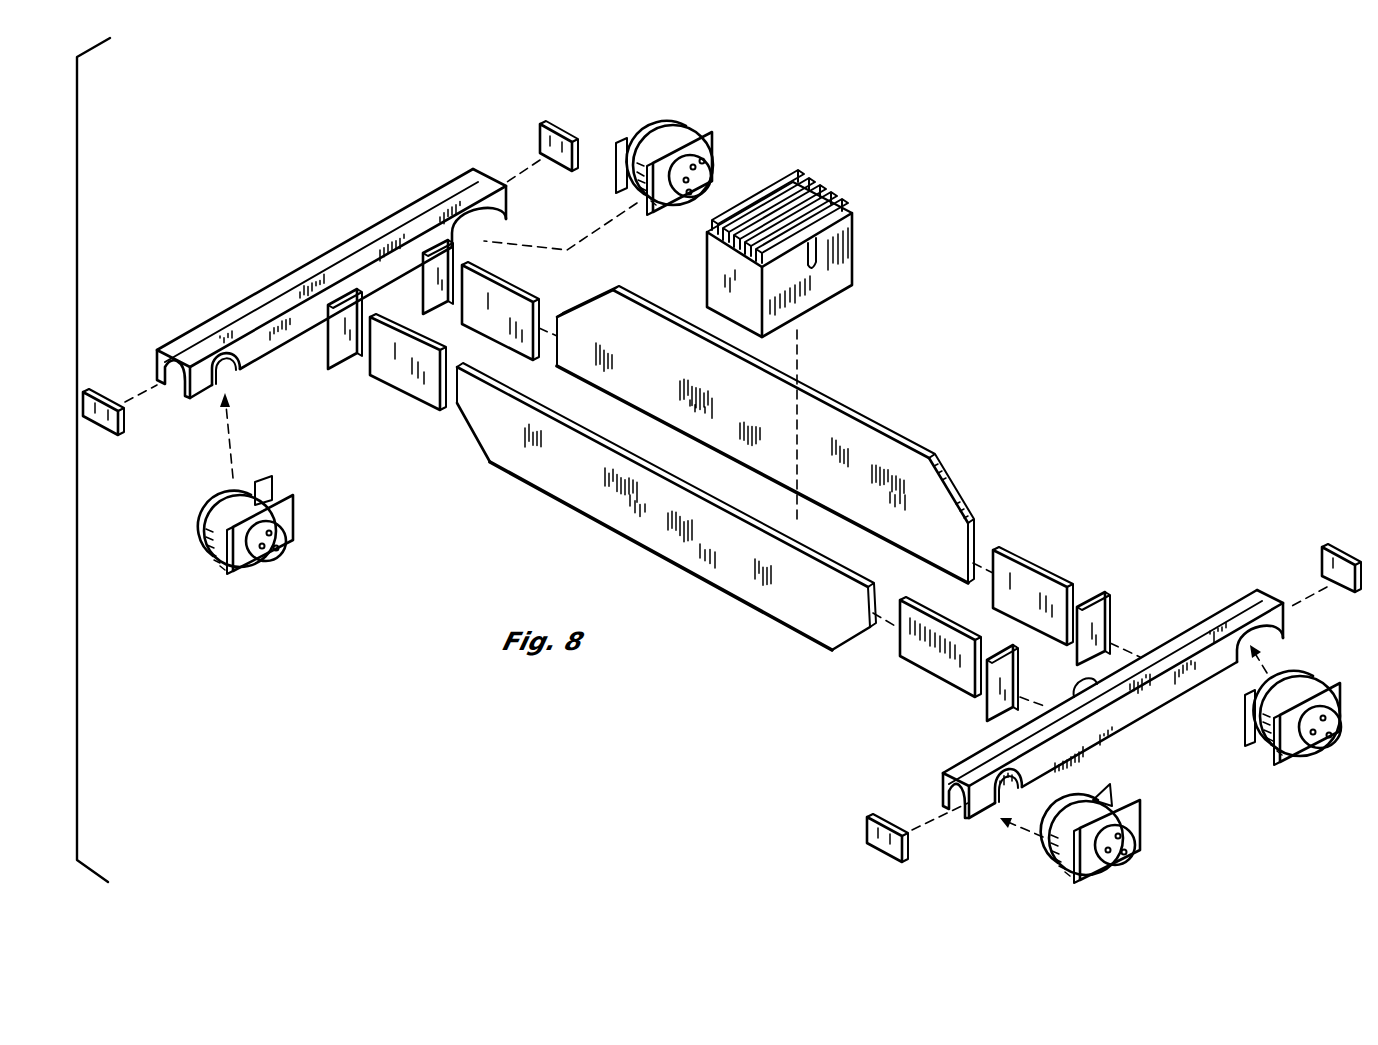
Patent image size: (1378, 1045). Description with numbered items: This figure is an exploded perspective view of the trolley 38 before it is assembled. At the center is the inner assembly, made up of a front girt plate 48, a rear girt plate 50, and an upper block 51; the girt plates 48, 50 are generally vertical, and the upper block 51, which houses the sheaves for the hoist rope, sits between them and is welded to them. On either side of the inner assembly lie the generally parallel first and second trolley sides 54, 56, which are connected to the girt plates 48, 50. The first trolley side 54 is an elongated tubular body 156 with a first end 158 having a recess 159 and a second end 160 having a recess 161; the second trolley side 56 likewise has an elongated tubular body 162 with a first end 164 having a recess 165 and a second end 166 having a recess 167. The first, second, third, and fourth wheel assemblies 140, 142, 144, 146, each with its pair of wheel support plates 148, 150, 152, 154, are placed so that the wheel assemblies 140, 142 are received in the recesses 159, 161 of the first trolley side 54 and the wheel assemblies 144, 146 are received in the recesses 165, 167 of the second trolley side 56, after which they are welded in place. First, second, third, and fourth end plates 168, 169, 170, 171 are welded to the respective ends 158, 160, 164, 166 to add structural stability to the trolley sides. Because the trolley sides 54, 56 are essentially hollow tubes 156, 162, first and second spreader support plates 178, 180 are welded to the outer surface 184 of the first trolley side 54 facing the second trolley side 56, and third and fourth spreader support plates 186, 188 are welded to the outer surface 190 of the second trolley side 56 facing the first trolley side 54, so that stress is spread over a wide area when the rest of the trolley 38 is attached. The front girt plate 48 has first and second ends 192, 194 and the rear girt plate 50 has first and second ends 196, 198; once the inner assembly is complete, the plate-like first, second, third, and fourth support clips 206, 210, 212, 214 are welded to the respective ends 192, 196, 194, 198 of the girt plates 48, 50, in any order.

The trolley 38 is at (541, 535).
The front girt plate 48 is at (749, 586).
The rear girt plate 50 is at (865, 432).
The upper block 51 is at (843, 251).
The first trolley side 54 is at (356, 234).
The second trolley side 56 is at (1199, 720).
The first wheel assembly 140 is at (253, 572).
The second wheel assembly 142 is at (712, 164).
The third wheel assembly 144 is at (1128, 866).
The fourth wheel assembly 146 is at (1327, 737).
The wheel support plates 148 is at (275, 480).
The wheel support plates 150 is at (680, 128).
The wheel support plates 152 is at (1137, 826).
The wheel support plates 154 is at (1305, 672).
The elongated tubular body 156 is at (405, 217).
The first end 158 is at (230, 312).
The recess 159 is at (217, 388).
The second end 160 is at (470, 169).
The recess 161 is at (471, 240).
The elongated tubular body 162 is at (1105, 748).
The first end 164 is at (967, 762).
The recess 165 is at (997, 812).
The second end 166 is at (1262, 590).
The recess 167 is at (1273, 653).
The first end plate 168 is at (108, 427).
The second end plate 169 is at (566, 128).
The third end plate 170 is at (866, 823).
The fourth end plate 171 is at (1322, 552).
The first spreader support plate 178 is at (338, 367).
The second spreader support plate 180 is at (433, 317).
The outer surface 184 is at (290, 322).
The third spreader support plate 186 is at (987, 704).
The fourth spreader support plate 188 is at (1105, 595).
The outer surface 190 is at (1095, 715).
The first end 192 is at (497, 436).
The second end 194 is at (834, 636).
The first end 196 is at (606, 312).
The second end 198 is at (932, 485).
The first support clip 206 is at (417, 397).
The second support clip 210 is at (512, 298).
The third support clip 212 is at (933, 660).
The fourth support clip 214 is at (1035, 577).